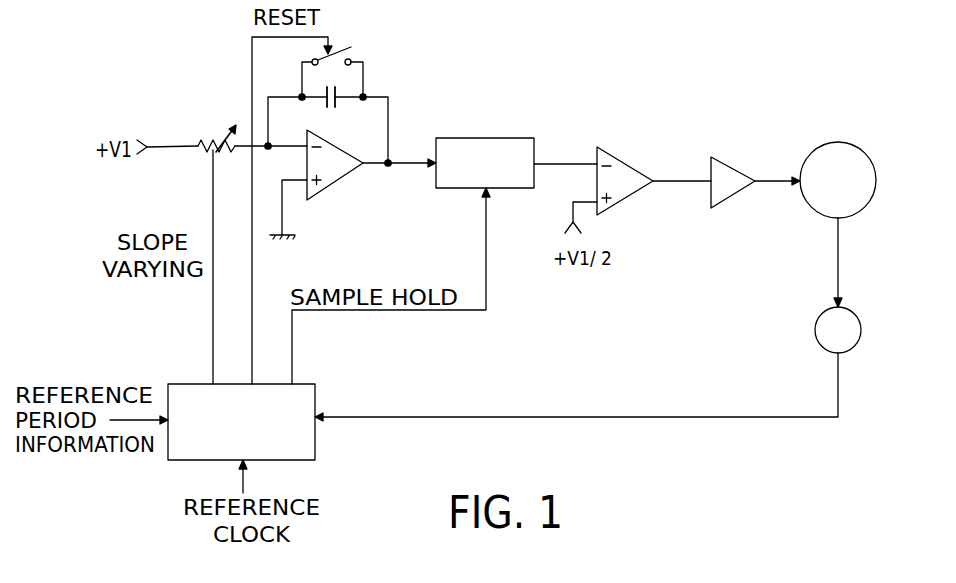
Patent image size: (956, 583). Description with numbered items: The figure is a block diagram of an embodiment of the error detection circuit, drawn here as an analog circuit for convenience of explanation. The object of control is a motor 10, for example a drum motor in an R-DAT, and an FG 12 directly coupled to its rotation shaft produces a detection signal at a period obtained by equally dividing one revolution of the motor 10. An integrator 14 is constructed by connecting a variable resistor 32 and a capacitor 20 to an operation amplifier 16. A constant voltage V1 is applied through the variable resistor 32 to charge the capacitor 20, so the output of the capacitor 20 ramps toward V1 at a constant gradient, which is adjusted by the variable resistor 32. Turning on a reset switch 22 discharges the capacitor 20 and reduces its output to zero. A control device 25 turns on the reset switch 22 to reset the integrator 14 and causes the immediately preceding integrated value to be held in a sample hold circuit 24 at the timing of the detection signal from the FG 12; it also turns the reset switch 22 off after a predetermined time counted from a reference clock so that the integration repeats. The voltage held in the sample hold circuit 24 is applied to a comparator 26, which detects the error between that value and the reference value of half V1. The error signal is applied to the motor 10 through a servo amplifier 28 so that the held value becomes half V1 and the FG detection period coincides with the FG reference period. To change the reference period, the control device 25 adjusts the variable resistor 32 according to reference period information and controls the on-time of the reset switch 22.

The motor 10 is at (871, 158).
The FG 12 is at (859, 340).
The integrator 14 is at (348, 126).
The operation amplifier 16 is at (333, 143).
The capacitor 20 is at (340, 93).
The reset switch 22 is at (350, 48).
The sample hold circuit 24 is at (500, 138).
The control device 25 is at (168, 448).
The comparator 26 is at (625, 160).
The servo amplifier 28 is at (737, 162).
The variable resistor 32 is at (212, 140).